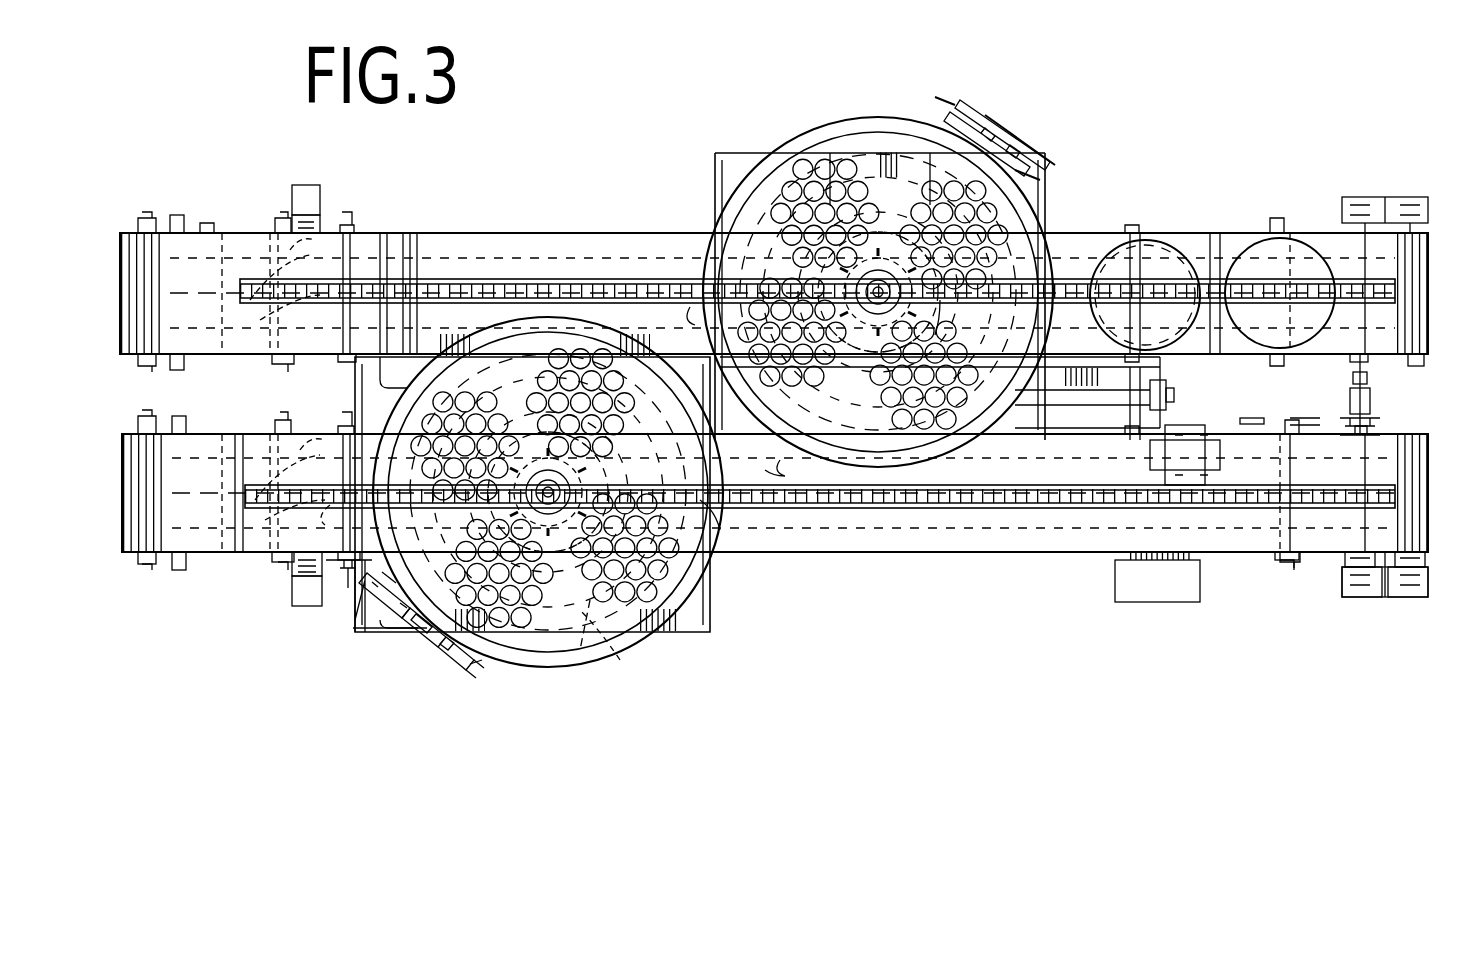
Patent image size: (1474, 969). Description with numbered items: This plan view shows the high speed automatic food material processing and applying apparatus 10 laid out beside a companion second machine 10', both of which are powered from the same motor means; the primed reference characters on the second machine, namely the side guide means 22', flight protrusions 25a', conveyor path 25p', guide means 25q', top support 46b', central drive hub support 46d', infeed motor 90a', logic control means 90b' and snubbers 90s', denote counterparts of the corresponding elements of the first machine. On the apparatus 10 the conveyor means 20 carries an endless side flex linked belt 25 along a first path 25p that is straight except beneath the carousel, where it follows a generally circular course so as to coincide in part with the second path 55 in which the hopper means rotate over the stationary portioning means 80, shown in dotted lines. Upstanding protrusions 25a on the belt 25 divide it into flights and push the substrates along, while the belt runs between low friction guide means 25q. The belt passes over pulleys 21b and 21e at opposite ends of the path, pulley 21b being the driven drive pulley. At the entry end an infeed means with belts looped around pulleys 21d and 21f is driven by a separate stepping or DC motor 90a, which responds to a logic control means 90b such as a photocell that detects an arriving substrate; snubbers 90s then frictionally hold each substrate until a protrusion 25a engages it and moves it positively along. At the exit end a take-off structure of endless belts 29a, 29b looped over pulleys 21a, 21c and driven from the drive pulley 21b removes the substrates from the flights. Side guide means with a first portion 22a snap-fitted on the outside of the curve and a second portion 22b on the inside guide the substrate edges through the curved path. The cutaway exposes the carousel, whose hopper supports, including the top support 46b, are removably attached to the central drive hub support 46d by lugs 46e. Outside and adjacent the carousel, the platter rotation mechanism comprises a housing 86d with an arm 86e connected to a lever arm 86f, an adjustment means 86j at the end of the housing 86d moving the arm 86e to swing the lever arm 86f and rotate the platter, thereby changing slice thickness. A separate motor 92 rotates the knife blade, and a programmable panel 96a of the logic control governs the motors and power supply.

The food material processing and applying apparatus 10 is at (790, 515).
The second machine 10' is at (794, 281).
The conveyor means 20 is at (862, 510).
The take-off pulley 21a is at (1408, 597).
The conveyor drive pulley 21b is at (1348, 598).
The take-off pulley 21c is at (1294, 568).
The infeed pulley 21d is at (345, 584).
The conveyor end pulley 21e is at (280, 565).
The infeed pulley 21f is at (145, 570).
The upper turret housing 22' is at (920, 268).
The first side guide portion 22a is at (612, 655).
The second side guide portion 22b is at (563, 488).
The conveyor belt 25 is at (1382, 487).
The flight protrusions 25a is at (313, 449).
The upper chain sprocket 25a' is at (1165, 269).
The first path 25p is at (952, 521).
The upper chain travel direction 25p' is at (626, 257).
The chain guide 25q is at (760, 458).
The upper chain guide 25q' is at (670, 324).
The take-off belt 29a is at (1405, 440).
The take-off belt 29b is at (1335, 455).
The top support 46b is at (632, 643).
The upper turret insert 46b' is at (1052, 159).
The central drive hub support means 46d is at (731, 544).
The upper turret 46d' is at (878, 272).
The lug 46e is at (940, 299).
The second path 55 is at (425, 352).
The portioning means 80 is at (555, 625).
The housing 86d is at (407, 632).
The arm 86e is at (447, 650).
The lever arm 86f is at (480, 667).
The adjustment means 86j is at (360, 626).
The infeed motor 90a is at (273, 594).
The upper sensor housing 90a' is at (317, 186).
The logic control means 90b is at (174, 493).
The upper sensor 90b' is at (171, 262).
The snubbers 90s is at (268, 453).
The upper sensor lead 90s' is at (262, 253).
The knife motor means 92 is at (507, 328).
The programmable panel 96a is at (1169, 592).